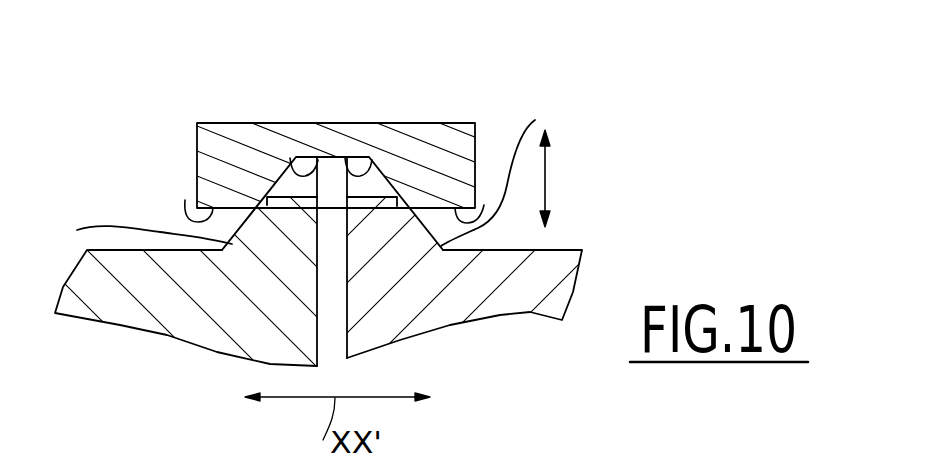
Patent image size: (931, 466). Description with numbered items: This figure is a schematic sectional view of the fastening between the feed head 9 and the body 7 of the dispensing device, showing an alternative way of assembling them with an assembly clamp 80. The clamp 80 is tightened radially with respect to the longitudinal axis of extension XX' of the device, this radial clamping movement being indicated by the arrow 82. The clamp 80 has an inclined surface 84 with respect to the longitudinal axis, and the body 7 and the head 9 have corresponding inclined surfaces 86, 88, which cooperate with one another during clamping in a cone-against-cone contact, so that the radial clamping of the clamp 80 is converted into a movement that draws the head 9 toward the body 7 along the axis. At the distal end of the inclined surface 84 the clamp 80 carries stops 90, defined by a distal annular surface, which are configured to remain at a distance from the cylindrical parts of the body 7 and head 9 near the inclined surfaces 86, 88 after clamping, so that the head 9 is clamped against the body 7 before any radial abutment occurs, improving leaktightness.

The body 7 is at (518, 312).
The feed head 9 is at (120, 307).
The assembly clamp 80 is at (399, 110).
The arrow 82 is at (548, 185).
The inclined surface of the clamp 84 is at (345, 160).
The inclined surface of the body 86 is at (500, 164).
The inclined surface of the head 88 is at (134, 230).
The stops 90 is at (185, 200).